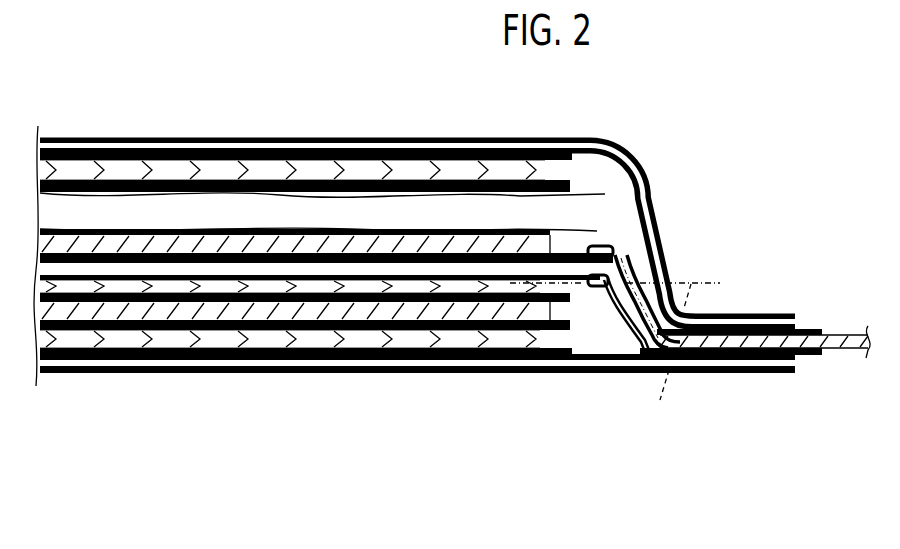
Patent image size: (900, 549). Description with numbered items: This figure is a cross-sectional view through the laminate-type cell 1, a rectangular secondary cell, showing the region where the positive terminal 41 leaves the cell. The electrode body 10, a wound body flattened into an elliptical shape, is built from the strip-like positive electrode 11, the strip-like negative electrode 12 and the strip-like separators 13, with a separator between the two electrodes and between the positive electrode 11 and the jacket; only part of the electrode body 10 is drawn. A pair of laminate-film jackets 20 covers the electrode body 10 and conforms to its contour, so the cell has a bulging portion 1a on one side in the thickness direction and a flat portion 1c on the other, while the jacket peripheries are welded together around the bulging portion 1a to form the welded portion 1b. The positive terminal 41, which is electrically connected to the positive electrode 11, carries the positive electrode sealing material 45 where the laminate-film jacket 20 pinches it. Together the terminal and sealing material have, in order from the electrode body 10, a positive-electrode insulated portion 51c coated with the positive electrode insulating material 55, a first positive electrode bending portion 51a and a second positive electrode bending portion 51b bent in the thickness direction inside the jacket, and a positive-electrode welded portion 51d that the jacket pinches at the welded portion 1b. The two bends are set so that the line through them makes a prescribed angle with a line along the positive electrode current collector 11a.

The laminate-type cell 1 is at (780, 106).
The bulging portion 1a is at (201, 136).
The welded portion 1b is at (760, 375).
The flat portion 1c is at (437, 375).
The electrode body 10 is at (600, 180).
The positive electrode 11 is at (379, 165).
The positive electrode current collector 11a is at (508, 300).
The negative electrode 12 is at (362, 307).
The separator 13 is at (288, 182).
The laminate-film jacket 20 is at (646, 174).
The positive terminal 41 is at (813, 357).
The positive electrode sealing material 45 is at (801, 328).
The first positive electrode bending portion 51a is at (632, 258).
The second positive electrode bending portion 51b is at (643, 375).
The positive-electrode insulated portion 51c is at (612, 250).
The positive-electrode welded portion 51d is at (717, 375).
The positive electrode insulating material 55 is at (584, 287).